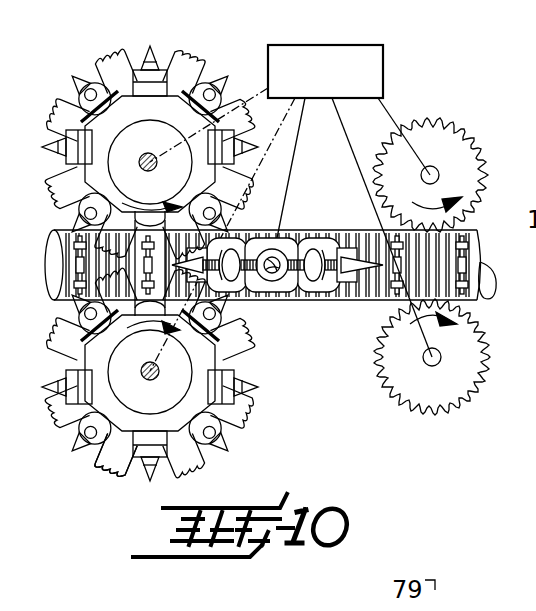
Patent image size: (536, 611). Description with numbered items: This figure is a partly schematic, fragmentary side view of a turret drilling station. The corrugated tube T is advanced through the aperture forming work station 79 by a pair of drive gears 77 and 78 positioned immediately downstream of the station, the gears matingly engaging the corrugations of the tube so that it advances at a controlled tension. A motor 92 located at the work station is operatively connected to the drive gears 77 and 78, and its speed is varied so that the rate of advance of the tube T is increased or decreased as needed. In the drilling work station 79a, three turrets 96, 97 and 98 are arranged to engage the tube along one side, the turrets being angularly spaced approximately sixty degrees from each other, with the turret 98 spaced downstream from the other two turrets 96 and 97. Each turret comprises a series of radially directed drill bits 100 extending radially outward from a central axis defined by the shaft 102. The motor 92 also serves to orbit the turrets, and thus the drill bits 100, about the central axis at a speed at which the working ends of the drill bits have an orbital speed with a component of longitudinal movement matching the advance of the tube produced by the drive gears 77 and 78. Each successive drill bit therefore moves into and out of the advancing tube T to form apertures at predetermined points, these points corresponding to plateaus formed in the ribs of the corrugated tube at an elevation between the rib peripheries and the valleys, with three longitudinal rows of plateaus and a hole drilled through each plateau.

The motor 92 is at (370, 45).
The drive gear 77 is at (449, 133).
The drive gear 78 is at (446, 410).
The turret 98 is at (303, 226).
The turret 96 is at (140, 76).
The turret 97 is at (230, 414).
The drill bits 100 is at (220, 95).
The shaft 102 is at (162, 165).
The aperture forming work station 79 is at (370, 405).
The drilling work station 79a is at (128, 479).
The tube T is at (361, 301).